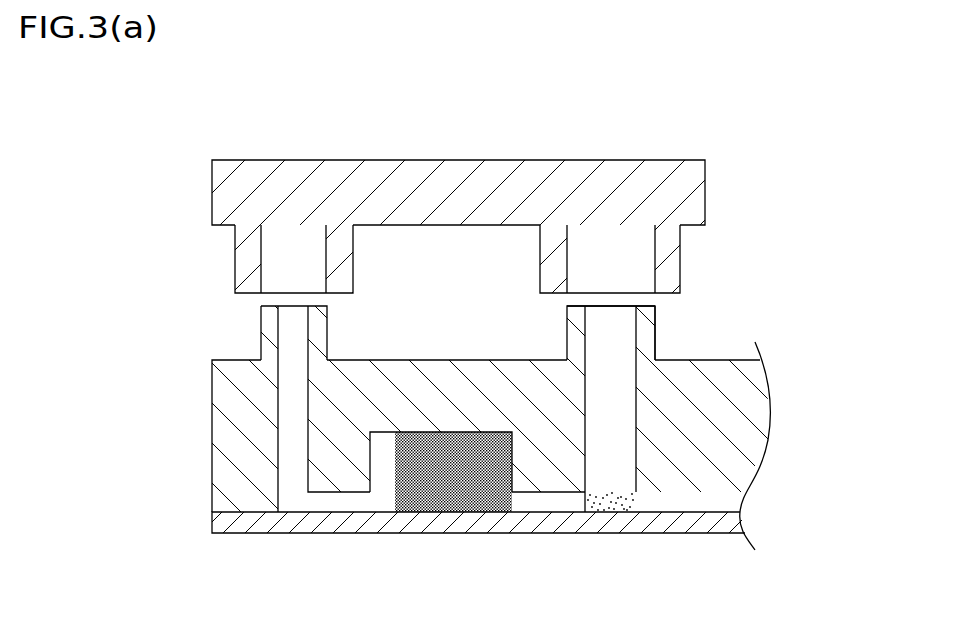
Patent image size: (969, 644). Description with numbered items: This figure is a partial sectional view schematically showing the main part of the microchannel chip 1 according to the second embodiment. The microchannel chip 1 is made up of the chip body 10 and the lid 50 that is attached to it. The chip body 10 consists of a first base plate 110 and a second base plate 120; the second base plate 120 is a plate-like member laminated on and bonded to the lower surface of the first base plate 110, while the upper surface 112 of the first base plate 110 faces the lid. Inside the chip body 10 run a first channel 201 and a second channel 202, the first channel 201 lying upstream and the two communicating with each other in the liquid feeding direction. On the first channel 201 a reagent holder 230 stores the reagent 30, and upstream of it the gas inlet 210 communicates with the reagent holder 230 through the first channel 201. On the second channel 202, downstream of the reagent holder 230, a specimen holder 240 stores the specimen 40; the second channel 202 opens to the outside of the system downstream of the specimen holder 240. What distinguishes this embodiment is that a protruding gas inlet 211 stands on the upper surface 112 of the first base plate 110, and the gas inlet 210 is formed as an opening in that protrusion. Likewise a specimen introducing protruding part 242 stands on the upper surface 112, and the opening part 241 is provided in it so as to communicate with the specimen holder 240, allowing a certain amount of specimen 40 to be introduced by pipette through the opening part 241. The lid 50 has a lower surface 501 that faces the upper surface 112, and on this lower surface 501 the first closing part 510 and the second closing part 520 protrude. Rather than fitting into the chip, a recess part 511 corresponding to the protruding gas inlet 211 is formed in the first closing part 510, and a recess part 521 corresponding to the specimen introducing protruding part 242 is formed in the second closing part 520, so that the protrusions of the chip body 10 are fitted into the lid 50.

The microchannel chip 1 is at (738, 171).
The chip body 10 is at (120, 463).
The first base plate 110 is at (212, 492).
The upper surface 112 is at (726, 358).
The second base plate 120 is at (212, 528).
The first channel 201 is at (358, 500).
The second channel 202 is at (697, 500).
The gas inlet 210 is at (292, 308).
The protruding gas inlet 211 is at (262, 338).
The reagent holder 230 is at (497, 503).
The specimen holder 240 is at (612, 498).
The opening part 241 is at (615, 320).
The specimen introducing protruding part 242 is at (647, 344).
The reagent 30 is at (440, 440).
The specimen 40 is at (612, 505).
The lid 50 is at (516, 185).
The lower surface 501 is at (449, 228).
The first closing part 510 is at (234, 266).
The recess part 511 is at (327, 270).
The second closing part 520 is at (682, 265).
The recess part 521 is at (567, 268).